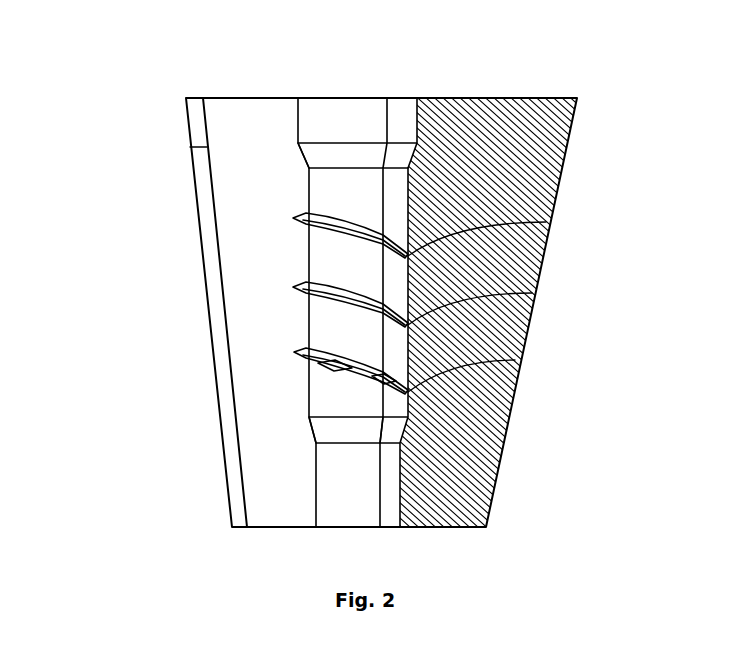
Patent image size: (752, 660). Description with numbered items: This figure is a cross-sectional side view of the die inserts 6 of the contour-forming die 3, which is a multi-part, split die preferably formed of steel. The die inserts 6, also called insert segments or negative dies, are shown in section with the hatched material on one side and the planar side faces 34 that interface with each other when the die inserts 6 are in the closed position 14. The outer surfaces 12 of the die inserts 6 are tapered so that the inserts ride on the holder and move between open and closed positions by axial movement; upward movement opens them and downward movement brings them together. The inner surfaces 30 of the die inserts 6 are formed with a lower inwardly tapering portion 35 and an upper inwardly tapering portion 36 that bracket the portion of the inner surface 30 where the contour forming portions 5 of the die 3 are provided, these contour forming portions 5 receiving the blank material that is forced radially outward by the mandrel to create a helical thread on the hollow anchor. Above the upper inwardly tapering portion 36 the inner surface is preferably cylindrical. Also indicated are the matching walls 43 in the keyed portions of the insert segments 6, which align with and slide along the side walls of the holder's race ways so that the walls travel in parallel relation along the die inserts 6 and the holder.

The contour-forming die 3 is at (133, 58).
The die inserts 6 is at (216, 97).
The outer surfaces 12 is at (212, 339).
The closed position 14 is at (606, 138).
The matching walls 43 is at (190, 147).
The planar side faces 34 is at (271, 123).
The upper inwardly tapering portion 36 is at (310, 160).
The inner surfaces 30 is at (365, 125).
The lower inwardly tapering portion 35 is at (316, 427).
The contour forming portions 5 is at (335, 223).